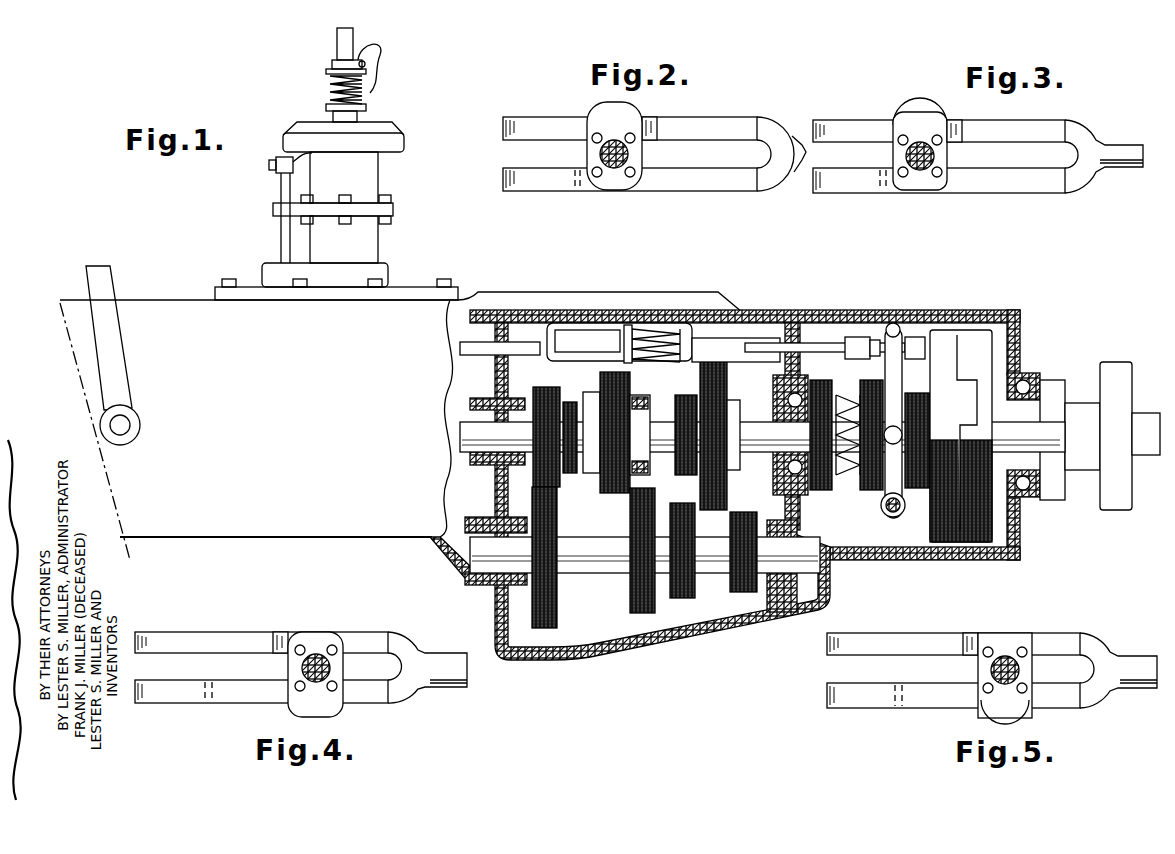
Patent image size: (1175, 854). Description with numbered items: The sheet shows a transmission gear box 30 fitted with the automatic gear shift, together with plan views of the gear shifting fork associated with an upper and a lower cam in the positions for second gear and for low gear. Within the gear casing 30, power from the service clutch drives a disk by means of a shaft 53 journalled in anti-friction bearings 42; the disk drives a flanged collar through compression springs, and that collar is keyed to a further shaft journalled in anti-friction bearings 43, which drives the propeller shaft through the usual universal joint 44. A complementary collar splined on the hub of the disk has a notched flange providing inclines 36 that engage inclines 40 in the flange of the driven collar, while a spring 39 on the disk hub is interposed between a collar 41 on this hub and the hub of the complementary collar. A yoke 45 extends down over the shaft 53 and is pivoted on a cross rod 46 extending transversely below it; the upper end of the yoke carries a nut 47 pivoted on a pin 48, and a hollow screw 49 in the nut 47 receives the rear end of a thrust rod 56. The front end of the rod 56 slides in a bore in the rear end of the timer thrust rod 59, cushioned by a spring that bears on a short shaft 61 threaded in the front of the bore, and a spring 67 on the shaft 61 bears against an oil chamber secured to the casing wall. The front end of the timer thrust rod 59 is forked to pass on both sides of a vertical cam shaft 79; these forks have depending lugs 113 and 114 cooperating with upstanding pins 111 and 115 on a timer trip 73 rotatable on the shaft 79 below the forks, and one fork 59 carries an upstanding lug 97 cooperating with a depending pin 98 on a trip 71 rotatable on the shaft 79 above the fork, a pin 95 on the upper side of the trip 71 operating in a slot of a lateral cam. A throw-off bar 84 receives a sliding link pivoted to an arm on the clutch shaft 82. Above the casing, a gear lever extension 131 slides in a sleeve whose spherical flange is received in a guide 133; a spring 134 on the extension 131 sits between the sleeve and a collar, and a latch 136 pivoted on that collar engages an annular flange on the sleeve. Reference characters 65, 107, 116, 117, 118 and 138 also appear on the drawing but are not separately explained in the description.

In FIG. 1, the transmission gear box 30 is at (597, 613).
In FIG. 1, the inclines 36 is at (974, 430).
In FIG. 1, the spring 39 is at (840, 400).
In FIG. 1, the inclines 40 is at (963, 440).
In FIG. 1, the collar 41 is at (825, 470).
In FIG. 1, the anti-friction bearings 42 is at (778, 478).
In FIG. 1, the anti-friction bearings 43 is at (1022, 378).
In FIG. 1, the universal joint 44 is at (1112, 372).
In FIG. 1, the yoke 45 is at (893, 490).
In FIG. 1, the cross rod 46 is at (890, 512).
In FIG. 1, the nut 47 is at (908, 350).
In FIG. 1, the pin 48 is at (893, 322).
In FIG. 1, the hollow screw 49 is at (862, 338).
In FIG. 1, the shaft 53 is at (486, 420).
In FIG. 1, the thrust rod 56 is at (815, 350).
In FIG. 1, the timer thrust rod 59 is at (530, 350).
In FIG. 2, the timer thrust rod 59 is at (766, 128).
In FIG. 3, the timer thrust rod 59 is at (1075, 130).
In FIG. 4, the timer thrust rod 59 is at (398, 640).
In FIG. 5, the timer thrust rod 59 is at (1093, 645).
In FIG. 1, the short shaft 61 is at (661, 343).
In FIG. 1, the gear 65 is at (617, 466).
In FIG. 1, the spring 67 is at (645, 343).
In FIG. 2, the trip 71 is at (625, 115).
In FIG. 3, the trip 71 is at (920, 151).
In FIG. 4, the trip 71 is at (318, 712).
In FIG. 5, the trip 71 is at (1005, 675).
In FIG. 3, the timer trip 73 is at (920, 112).
In FIG. 5, the timer trip 73 is at (1010, 715).
In FIG. 2, the vertical cam shaft 79 is at (600, 155).
In FIG. 3, the vertical cam shaft 79 is at (920, 156).
In FIG. 4, the vertical cam shaft 79 is at (316, 668).
In FIG. 5, the vertical cam shaft 79 is at (1020, 670).
In FIG. 1, the clutch shaft 82 is at (122, 424).
In FIG. 1, the throw-off bar 84 is at (282, 189).
In FIG. 2, the pin 95 is at (594, 135).
In FIG. 4, the pin 95 is at (338, 690).
In FIG. 2, the upstanding lug 97 is at (655, 125).
In FIG. 3, the upstanding lug 97 is at (960, 125).
In FIG. 4, the upstanding lug 97 is at (285, 632).
In FIG. 5, the upstanding lug 97 is at (972, 645).
In FIG. 2, the depending pin 98 is at (635, 142).
In FIG. 4, the depending pin 98 is at (296, 690).
In FIG. 3, the boss outline 107 is at (900, 138).
In FIG. 3, the upstanding pin 111 is at (880, 138).
In FIG. 5, the upstanding pin 111 is at (1028, 692).
In FIG. 2, the depending lug 113 is at (575, 180).
In FIG. 3, the depending lug 113 is at (882, 182).
In FIG. 4, the depending lug 113 is at (208, 695).
In FIG. 5, the depending lug 113 is at (898, 698).
In FIG. 2, the depending lug 114 is at (660, 135).
In FIG. 3, the depending lug 114 is at (962, 135).
In FIG. 5, the depending lug 114 is at (980, 645).
In FIG. 3, the upstanding pin 115 is at (942, 144).
In FIG. 5, the upstanding pin 115 is at (984, 692).
In FIG. 3, the screw 116 is at (942, 180).
In FIG. 5, the screw 116 is at (983, 655).
In FIG. 2, the screw 117 is at (636, 180).
In FIG. 4, the screw 117 is at (296, 652).
In FIG. 3, the screw 118 is at (903, 178).
In FIG. 5, the screw 118 is at (1028, 648).
In FIG. 1, the gear lever extension 131 is at (337, 40).
In FIG. 1, the guide 133 is at (362, 174).
In FIG. 1, the spring 134 is at (328, 90).
In FIG. 1, the latch 136 is at (371, 79).
In FIG. 2, the fork arm end 138 is at (505, 188).
In FIG. 3, the fork arm end 138 is at (815, 192).
In FIG. 4, the fork arm end 138 is at (140, 703).
In FIG. 5, the fork arm end 138 is at (829, 706).